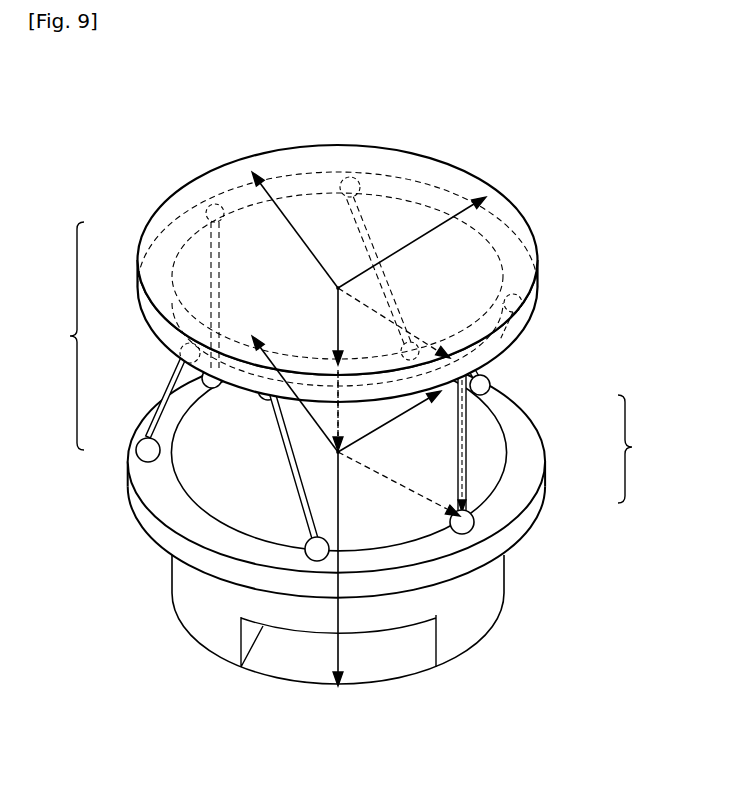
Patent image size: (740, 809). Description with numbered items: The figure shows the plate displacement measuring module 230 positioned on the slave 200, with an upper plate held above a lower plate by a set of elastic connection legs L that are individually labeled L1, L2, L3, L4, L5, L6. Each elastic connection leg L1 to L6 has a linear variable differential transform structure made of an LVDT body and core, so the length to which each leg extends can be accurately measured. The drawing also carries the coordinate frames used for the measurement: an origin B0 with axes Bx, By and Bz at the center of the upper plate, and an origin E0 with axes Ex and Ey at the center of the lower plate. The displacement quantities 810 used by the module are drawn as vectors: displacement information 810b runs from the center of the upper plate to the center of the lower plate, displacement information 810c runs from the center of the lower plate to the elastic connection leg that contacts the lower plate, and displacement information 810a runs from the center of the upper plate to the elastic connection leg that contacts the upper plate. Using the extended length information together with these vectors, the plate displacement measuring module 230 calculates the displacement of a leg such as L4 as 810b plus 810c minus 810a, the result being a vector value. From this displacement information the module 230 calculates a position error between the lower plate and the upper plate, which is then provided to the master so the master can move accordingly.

The plate displacement measuring module 230 is at (162, 162).
The slave 200 is at (492, 700).
The legs (link group) L is at (68, 336).
The elastic connection leg L1 is at (213, 300).
The elastic connection leg L2 is at (185, 390).
The elastic connection leg L3 is at (290, 452).
The elastic connection leg L4 is at (457, 473).
The elastic connection leg L5 is at (370, 235).
The elastic connection leg L6 is at (507, 317).
The distance measurement lines group 810 is at (641, 449).
The displacement information 810a is at (382, 313).
The displacement information 810b is at (340, 418).
The displacement information 810c is at (417, 497).
The platform coordinate origin B0 is at (329, 293).
The platform x-axis Bx is at (460, 213).
The platform y-axis By is at (267, 192).
The platform z-axis Bz is at (337, 334).
The base coordinate origin E0 is at (326, 451).
The base x-axis Ex is at (360, 440).
The base y-axis Ey is at (263, 350).